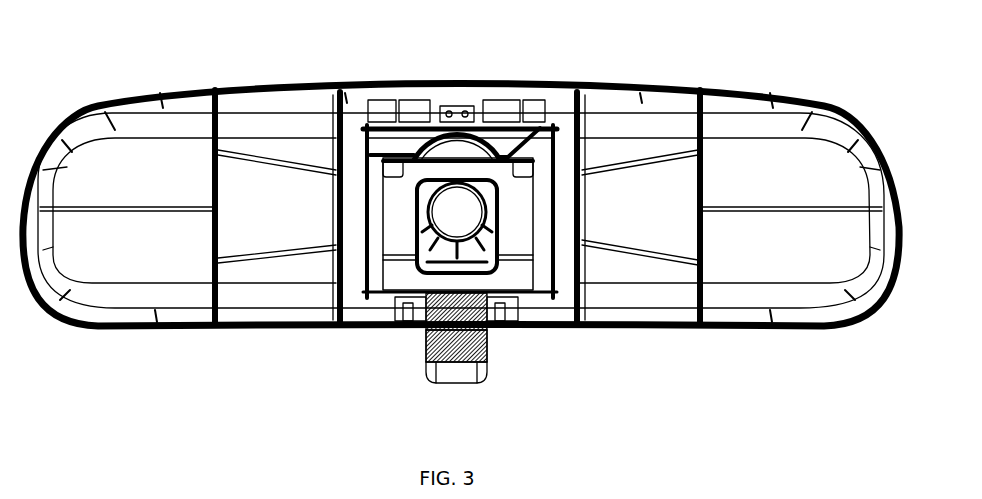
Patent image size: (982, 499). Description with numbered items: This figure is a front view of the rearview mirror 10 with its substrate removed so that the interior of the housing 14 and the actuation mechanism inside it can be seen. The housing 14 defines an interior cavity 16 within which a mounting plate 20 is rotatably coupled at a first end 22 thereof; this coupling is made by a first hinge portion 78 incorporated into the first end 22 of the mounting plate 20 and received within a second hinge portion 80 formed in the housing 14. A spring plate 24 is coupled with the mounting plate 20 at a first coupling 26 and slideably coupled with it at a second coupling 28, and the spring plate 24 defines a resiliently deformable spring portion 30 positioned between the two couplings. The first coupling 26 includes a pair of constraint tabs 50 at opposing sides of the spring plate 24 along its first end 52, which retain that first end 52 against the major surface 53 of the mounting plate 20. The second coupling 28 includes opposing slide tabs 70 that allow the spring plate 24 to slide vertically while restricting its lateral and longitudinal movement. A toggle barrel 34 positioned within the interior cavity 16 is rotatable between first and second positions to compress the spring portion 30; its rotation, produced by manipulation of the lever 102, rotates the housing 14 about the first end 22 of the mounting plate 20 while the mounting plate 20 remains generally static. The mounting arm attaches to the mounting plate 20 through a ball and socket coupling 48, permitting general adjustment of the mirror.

The rearview mirror 10 is at (667, 50).
The housing 14 is at (760, 97).
The interior cavity 16 is at (786, 291).
The mounting plate 20 is at (412, 127).
The first end 22 is at (362, 102).
The spring plate 24 is at (582, 172).
The first coupling 26 is at (398, 177).
The second coupling 28 is at (392, 279).
The spring portion 30 is at (405, 232).
The toggle barrel 34 is at (392, 326).
The ball and socket coupling 48 is at (470, 105).
The constraint tabs 50 is at (366, 140).
The first end 52 is at (499, 125).
The major surface 53 is at (333, 127).
The slide tabs 70 is at (360, 270).
The first hinge portion 78 is at (337, 97).
The second hinge portion 80 is at (532, 107).
The lever 102 is at (450, 374).